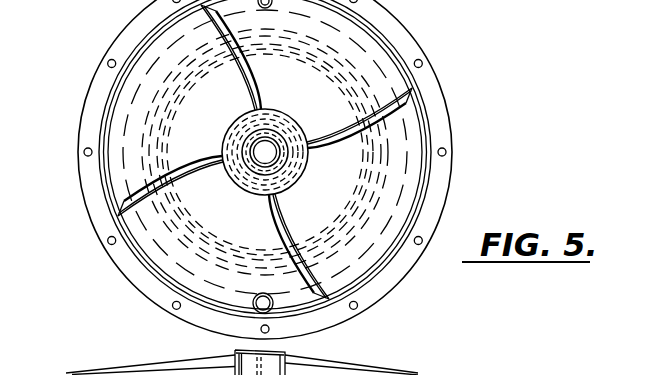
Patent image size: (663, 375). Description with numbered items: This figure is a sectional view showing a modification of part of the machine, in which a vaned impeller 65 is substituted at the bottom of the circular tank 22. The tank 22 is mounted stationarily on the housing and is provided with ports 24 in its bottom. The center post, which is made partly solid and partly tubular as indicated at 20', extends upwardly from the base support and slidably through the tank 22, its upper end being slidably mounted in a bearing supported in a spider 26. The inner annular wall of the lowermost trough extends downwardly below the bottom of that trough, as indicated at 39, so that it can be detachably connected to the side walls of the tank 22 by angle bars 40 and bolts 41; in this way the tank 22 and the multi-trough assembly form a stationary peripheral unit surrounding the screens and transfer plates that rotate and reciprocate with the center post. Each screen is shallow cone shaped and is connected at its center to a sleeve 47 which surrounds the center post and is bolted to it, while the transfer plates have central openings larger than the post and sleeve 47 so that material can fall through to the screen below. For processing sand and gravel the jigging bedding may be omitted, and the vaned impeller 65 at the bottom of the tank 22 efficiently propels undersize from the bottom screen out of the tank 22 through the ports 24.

The tubular portion of center post 20' is at (296, 187).
The circular tank 22 is at (394, 218).
The ports 24 is at (272, 8).
The spider 26 is at (453, 370).
The downward extension of inner annular wall 39 is at (430, 174).
The angle bars 40 is at (153, 297).
The bolts 41 is at (116, 62).
The sleeve 47 is at (287, 135).
The vaned impeller 65 is at (254, 93).